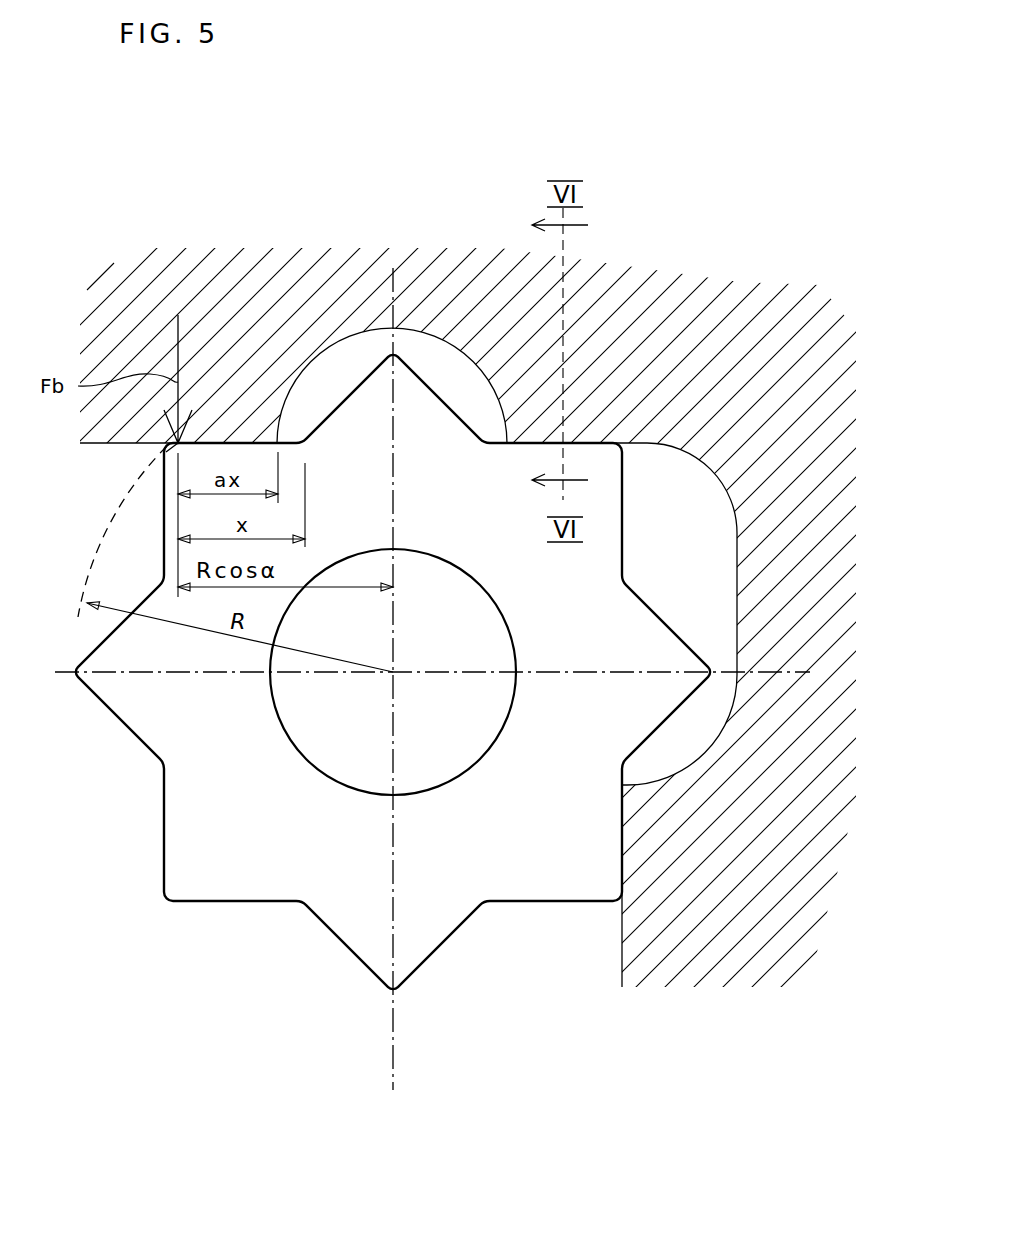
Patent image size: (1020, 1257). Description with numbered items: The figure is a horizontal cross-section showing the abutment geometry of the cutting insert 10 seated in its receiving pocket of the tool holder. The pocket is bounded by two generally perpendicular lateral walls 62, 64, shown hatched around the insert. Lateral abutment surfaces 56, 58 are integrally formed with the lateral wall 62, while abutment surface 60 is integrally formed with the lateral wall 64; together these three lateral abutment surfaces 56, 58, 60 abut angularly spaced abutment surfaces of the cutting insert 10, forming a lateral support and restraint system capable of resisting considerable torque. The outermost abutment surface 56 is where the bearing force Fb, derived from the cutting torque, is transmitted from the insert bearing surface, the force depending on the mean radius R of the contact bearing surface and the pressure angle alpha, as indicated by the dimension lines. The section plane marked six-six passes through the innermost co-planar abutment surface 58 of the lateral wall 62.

The cutting insert 10 is at (228, 830).
The lateral abutment surface 56 is at (240, 442).
The lateral abutment surface 58 is at (592, 443).
The lateral abutment surface 60 is at (622, 858).
The lateral wall 62 is at (458, 277).
The lateral wall 64 is at (814, 748).